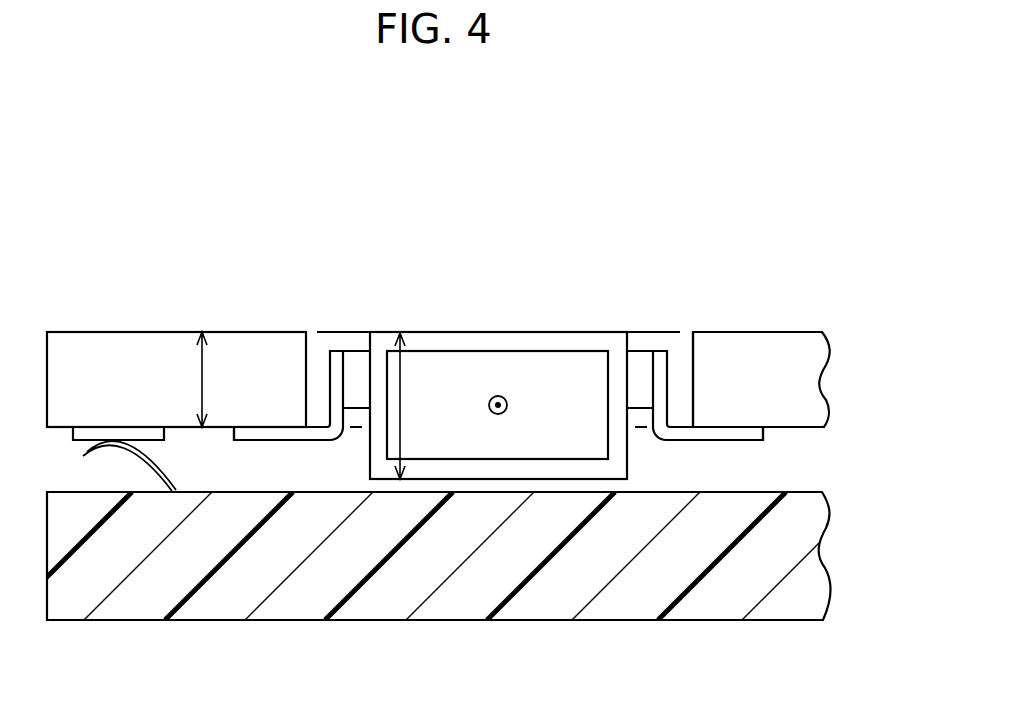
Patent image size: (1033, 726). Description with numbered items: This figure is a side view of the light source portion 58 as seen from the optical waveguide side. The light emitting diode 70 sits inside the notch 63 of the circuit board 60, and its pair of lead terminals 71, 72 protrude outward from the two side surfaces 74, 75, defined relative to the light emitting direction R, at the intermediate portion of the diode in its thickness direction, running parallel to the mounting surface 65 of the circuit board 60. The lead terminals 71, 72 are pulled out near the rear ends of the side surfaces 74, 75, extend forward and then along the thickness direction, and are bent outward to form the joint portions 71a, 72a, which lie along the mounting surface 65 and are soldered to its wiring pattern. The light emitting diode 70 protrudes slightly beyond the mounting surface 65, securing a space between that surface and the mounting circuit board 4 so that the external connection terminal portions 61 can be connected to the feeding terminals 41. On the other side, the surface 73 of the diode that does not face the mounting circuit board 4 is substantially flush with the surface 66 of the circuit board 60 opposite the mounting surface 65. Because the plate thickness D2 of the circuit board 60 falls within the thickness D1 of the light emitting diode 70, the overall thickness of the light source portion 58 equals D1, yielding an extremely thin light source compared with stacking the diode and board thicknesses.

The mounting circuit board 4 is at (717, 607).
The feeding terminals 41 is at (157, 470).
The light source portion 58 is at (463, 310).
The circuit board 60 is at (783, 350).
The external connection terminal portions 61 is at (87, 428).
The notch 63 is at (688, 355).
The mounting surface 65 is at (787, 430).
The surface of the circuit board 66 is at (178, 343).
The light emitting diode 70 is at (560, 332).
The lead terminal 71 is at (719, 422).
The joint portion 71a is at (743, 430).
The lead terminal 72 is at (285, 423).
The joint portion 72a is at (245, 428).
The surface of the light emitting diode 73 is at (413, 331).
The side surface 74 is at (638, 372).
The side surface 75 is at (366, 372).
The light emitting direction R is at (497, 396).
The thickness of the light emitting diode D1 is at (387, 396).
The plate thickness of the circuit board D2 is at (197, 363).